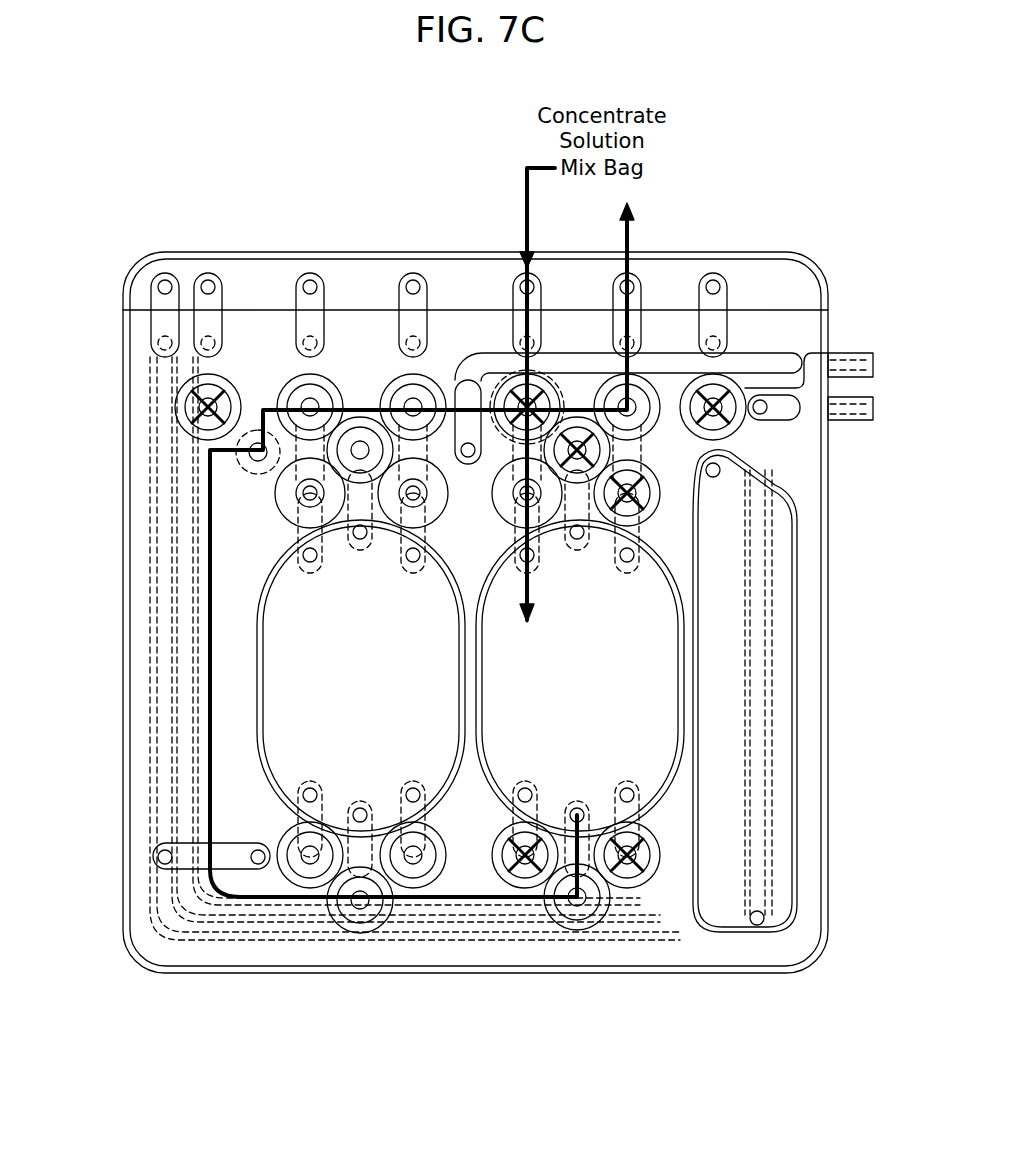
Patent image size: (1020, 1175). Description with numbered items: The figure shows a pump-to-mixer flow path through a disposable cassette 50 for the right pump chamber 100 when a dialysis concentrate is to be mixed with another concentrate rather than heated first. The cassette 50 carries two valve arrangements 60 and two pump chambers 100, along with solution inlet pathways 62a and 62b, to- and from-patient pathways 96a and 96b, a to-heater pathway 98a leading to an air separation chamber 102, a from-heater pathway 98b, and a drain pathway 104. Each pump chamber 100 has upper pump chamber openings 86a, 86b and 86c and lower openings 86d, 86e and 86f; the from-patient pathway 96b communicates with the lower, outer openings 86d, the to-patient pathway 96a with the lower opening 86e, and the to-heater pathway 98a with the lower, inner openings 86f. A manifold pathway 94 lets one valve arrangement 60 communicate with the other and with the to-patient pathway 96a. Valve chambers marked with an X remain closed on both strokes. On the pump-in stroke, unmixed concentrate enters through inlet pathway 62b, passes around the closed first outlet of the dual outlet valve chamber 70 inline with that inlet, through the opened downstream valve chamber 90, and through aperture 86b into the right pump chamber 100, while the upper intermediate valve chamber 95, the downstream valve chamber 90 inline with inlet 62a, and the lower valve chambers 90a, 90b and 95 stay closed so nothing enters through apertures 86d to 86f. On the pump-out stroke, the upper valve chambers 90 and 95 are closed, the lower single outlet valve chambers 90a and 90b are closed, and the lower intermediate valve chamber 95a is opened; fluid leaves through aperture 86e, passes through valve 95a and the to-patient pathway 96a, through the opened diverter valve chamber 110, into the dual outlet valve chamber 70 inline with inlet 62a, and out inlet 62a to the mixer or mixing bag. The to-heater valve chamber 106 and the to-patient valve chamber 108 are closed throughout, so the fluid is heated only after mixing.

The cassette 50 is at (780, 215).
The valve arrangement 60 is at (292, 322).
The solution inlet pathway 62a is at (423, 266).
The solution inlet pathway 62b is at (316, 266).
The dual outlet valve chamber 70 is at (300, 385).
The first pump chamber opening 86a is at (410, 565).
The pump chamber aperture 86b is at (308, 565).
The third pump opening 86c is at (360, 545).
The lower, outer pump chamber opening 86d is at (305, 785).
The lower pump chamber opening 86e is at (360, 800).
The lower, inner pump chamber opening 86f is at (413, 785).
The downstream valve chamber 90 is at (280, 522).
The lower single outlet valve chamber 90a is at (640, 880).
The lower single outlet valve chamber 90b is at (525, 880).
The manifold pathway 94 is at (455, 380).
The intermediate valve chamber 95 is at (355, 425).
The lower intermediate valve chamber 95a is at (575, 935).
The to-patient pathway 96a is at (228, 266).
The from-patient pathway 96b is at (152, 262).
The to-heater pathway 98a is at (760, 548).
The from-heater pathway 98b is at (785, 365).
The pump chamber 100 is at (305, 693).
The air separation chamber 102 is at (699, 903).
The drain pathway 104 is at (706, 266).
The to-heater valve chamber 106 is at (815, 350).
The to-patient valve chamber 108 is at (175, 375).
The diverter valve chamber 110 is at (250, 460).